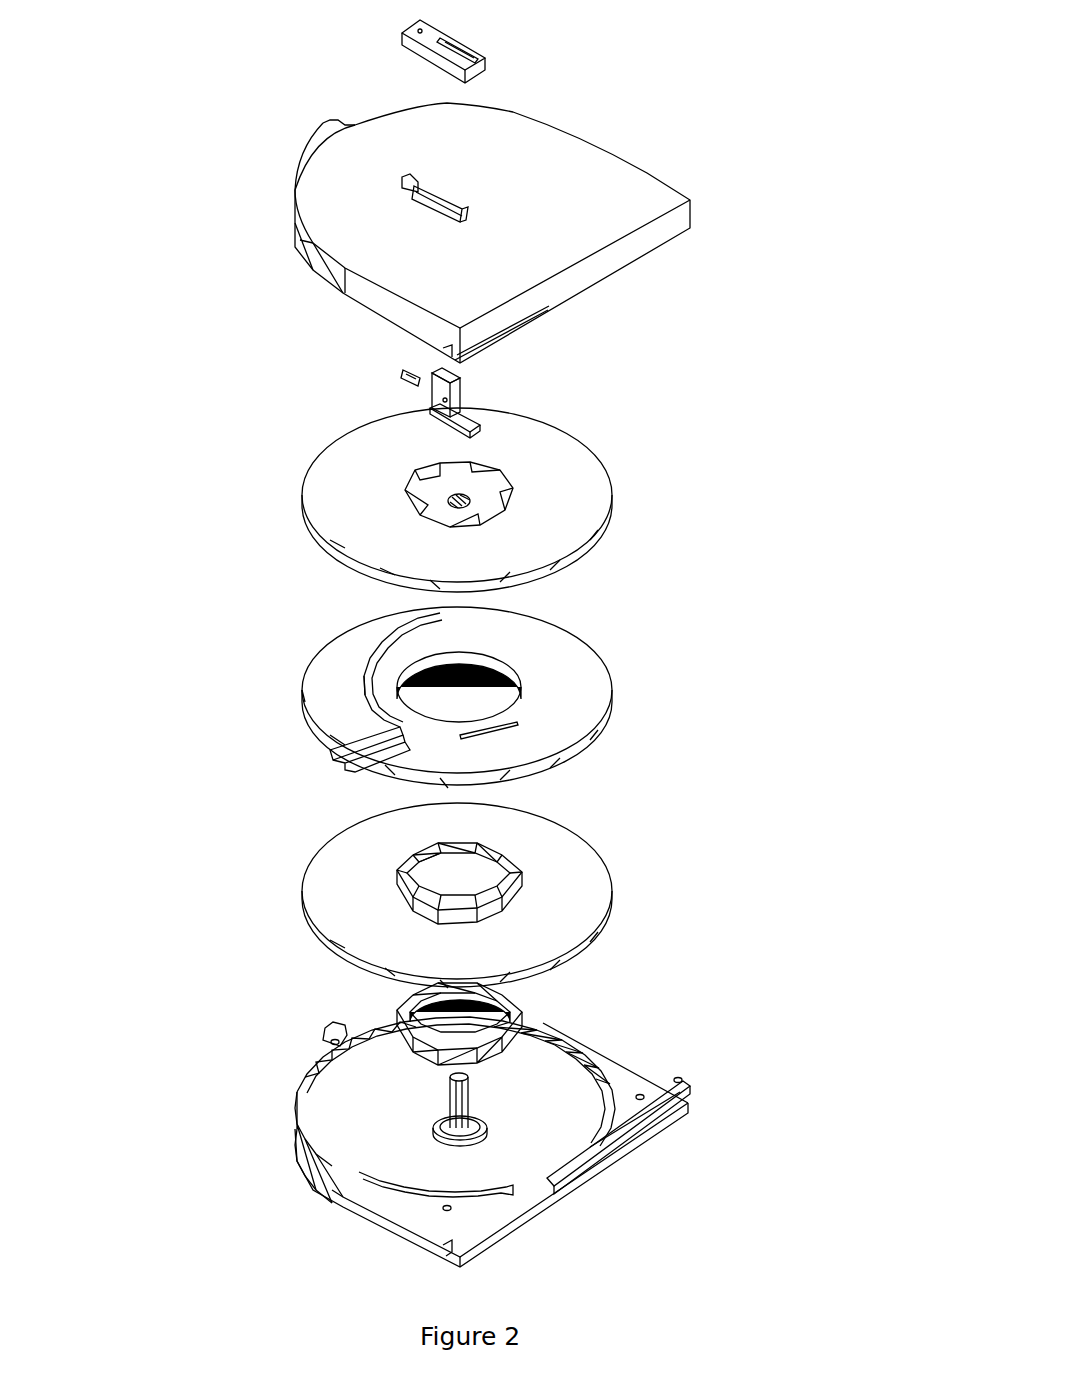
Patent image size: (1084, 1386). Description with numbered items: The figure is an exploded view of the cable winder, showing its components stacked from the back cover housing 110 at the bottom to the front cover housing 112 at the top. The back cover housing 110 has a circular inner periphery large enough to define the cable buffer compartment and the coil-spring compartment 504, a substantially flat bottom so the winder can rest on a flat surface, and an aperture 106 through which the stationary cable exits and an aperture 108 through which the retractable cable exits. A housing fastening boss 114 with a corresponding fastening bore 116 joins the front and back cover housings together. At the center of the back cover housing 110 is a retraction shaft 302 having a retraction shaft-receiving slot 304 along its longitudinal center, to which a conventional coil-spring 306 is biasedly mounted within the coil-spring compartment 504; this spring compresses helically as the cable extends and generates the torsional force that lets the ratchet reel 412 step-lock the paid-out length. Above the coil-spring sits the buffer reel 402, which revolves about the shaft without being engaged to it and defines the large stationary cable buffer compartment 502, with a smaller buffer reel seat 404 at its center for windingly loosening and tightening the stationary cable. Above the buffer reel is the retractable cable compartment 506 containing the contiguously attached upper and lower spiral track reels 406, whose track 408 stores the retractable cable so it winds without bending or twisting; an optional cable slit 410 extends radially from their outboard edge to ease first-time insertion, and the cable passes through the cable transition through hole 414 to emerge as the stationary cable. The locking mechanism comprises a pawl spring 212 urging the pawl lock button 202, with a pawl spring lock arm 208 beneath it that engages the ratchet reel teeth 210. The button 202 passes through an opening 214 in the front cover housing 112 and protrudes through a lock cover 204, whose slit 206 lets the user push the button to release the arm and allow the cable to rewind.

The aperture 106 is at (437, 1233).
The aperture 108 is at (553, 1113).
The back cover housing 110 is at (493, 1144).
The front cover housing 112 is at (676, 151).
The housing fastening boss 114 is at (318, 1040).
The fastening bore 116 is at (325, 1023).
The pawl lock button 202 is at (467, 390).
The lock cover 204 is at (480, 32).
The slit 206 is at (423, 197).
The pawl spring lock arm 208 is at (483, 415).
The ratchet reel teeth 210 is at (420, 510).
The pawl spring 212 is at (390, 366).
The opening 214 is at (430, 42).
The retraction shaft 302 is at (435, 1113).
The retraction shaft-receiving slot 304 is at (443, 1087).
The coil-spring 306 is at (520, 1027).
The buffer reel 402 is at (486, 895).
The buffer reel seat 404 is at (537, 883).
The upper spiral track reel 406 is at (422, 754).
The track 408 is at (360, 678).
The cable slit 410 is at (358, 742).
The ratchet reel 412 is at (518, 500).
The cable transition through hole 414 is at (482, 735).
The stationary cable buffer compartment 502 is at (352, 908).
The coil-spring compartment 504 is at (685, 1085).
The retractable cable compartment 506 is at (510, 754).